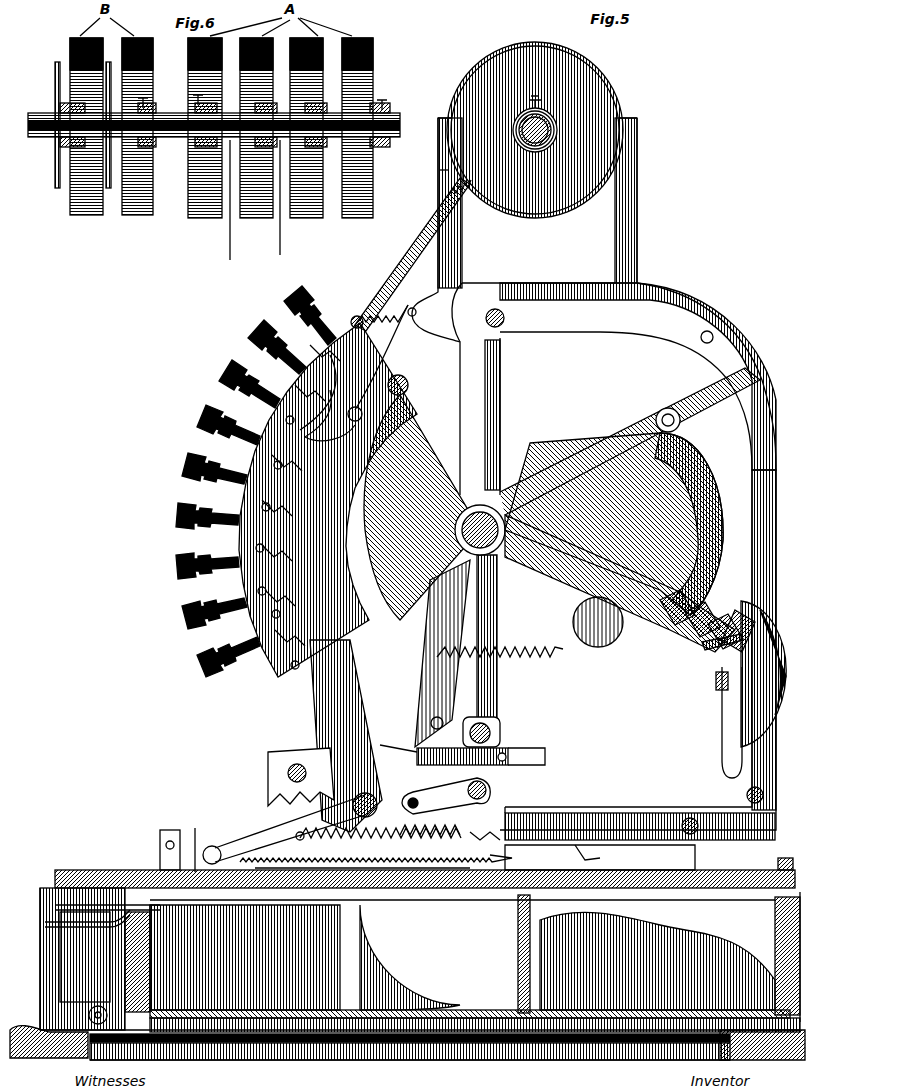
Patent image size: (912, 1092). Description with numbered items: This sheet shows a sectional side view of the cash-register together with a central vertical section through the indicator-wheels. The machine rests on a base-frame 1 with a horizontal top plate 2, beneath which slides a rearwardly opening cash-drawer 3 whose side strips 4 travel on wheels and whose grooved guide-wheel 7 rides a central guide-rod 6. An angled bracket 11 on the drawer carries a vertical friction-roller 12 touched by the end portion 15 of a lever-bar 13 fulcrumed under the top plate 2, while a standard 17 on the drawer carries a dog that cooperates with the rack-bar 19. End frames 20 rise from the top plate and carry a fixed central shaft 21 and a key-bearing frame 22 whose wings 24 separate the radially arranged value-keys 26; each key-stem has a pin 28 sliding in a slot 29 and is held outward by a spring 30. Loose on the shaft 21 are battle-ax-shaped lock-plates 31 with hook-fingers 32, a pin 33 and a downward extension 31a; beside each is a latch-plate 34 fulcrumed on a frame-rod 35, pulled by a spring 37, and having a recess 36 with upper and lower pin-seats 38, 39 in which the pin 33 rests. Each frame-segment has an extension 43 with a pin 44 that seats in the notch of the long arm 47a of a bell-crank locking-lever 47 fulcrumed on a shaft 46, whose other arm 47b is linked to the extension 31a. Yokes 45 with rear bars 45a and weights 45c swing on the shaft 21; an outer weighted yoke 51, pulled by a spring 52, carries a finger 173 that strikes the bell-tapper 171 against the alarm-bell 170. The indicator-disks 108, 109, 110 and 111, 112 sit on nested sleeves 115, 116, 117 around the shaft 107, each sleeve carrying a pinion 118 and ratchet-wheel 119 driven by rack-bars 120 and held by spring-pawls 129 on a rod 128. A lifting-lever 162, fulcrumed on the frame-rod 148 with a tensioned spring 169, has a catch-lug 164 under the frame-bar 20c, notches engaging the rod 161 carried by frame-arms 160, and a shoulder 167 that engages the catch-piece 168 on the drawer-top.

In FIG. 6, the shaft 107 is at (392, 120).
In FIG. 5, the shaft 107 is at (540, 132).
In FIG. 6, the indicator-disk 111 is at (142, 218).
In FIG. 5, the indicator-disk 111 is at (612, 143).
In FIG. 6, the indicator-disk 112 is at (85, 220).
In FIG. 6, the indicator-disk 108 is at (205, 218).
In FIG. 6, the indicator-disk 109 is at (255, 218).
In FIG. 6, the indicator-disk 110 is at (305, 218).
In FIG. 6, the tubular shaft or sleeve 115 is at (299, 202).
In FIG. 5, the tubular shaft or sleeve 115 is at (528, 146).
In FIG. 6, the second sleeve 116 is at (245, 202).
In FIG. 5, the second sleeve 116 is at (537, 148).
In FIG. 6, the third and outer sleeve 117 is at (158, 110).
In FIG. 5, the third and outer sleeve 117 is at (545, 148).
In FIG. 6, the pinion-wheel 118 is at (68, 150).
In FIG. 6, the ratchet-wheel 119 is at (57, 190).
In FIG. 5, the rack-bar 120 is at (410, 268).
In FIG. 5, the transverse rod or shaft 128 is at (448, 194).
In FIG. 5, the spring-pawl 129 is at (440, 172).
In FIG. 5, the spring 37 is at (380, 305).
In FIG. 5, the recess 36 is at (330, 340).
In FIG. 5, the value-keys 26 is at (322, 328).
In FIG. 5, the pin 28 is at (318, 372).
In FIG. 5, the slot 29 is at (280, 415).
In FIG. 5, the hook-fingers 32 is at (273, 463).
In FIG. 5, the spring 30 is at (262, 507).
In FIG. 5, the key-bearing frame 22 is at (256, 547).
In FIG. 5, the wings or ribs 24 is at (258, 591).
In FIG. 5, the latch-plate 34 is at (328, 577).
In FIG. 5, the upper rear pin-seat 38 is at (405, 380).
In FIG. 5, the pin 33 is at (362, 412).
In FIG. 5, the lower forward pin-seat 39 is at (340, 427).
In FIG. 5, the key lock-plate 31 is at (412, 455).
In FIG. 5, the end frames 20 is at (492, 392).
In FIG. 5, the cross frame-bar 20c is at (640, 812).
In FIG. 5, the transverse rod or shaft 21 is at (505, 462).
In FIG. 5, the upper side weight 45c is at (680, 460).
In FIG. 5, the yoke-shaped frame 45 is at (620, 590).
In FIG. 5, the rear bar 45a is at (700, 645).
In FIG. 5, the weighted yoke 51 is at (752, 618).
In FIG. 5, the tapper-operating finger 173 is at (720, 660).
In FIG. 5, the bell-tapper 171 is at (722, 736).
In FIG. 5, the alarm-bell 170 is at (774, 682).
In FIG. 5, the spring 52 is at (510, 640).
In FIG. 5, the extension 43 is at (455, 690).
In FIG. 5, the forward arm 47a is at (420, 722).
In FIG. 5, the downward extension 31a is at (470, 700).
In FIG. 5, the pin 44 is at (470, 750).
In FIG. 5, the segment locking-lever 47 is at (492, 728).
In FIG. 5, the horizontal shaft 46 is at (445, 725).
In FIG. 5, the remaining arm 47b is at (512, 755).
In FIG. 5, the frame-rod 148 is at (505, 785).
In FIG. 5, the transverse frame-rod 35 is at (352, 805).
In FIG. 5, the downturned outer end or shoulder 167 is at (218, 850).
In FIG. 5, the catch-piece 168 is at (218, 850).
In FIG. 5, the bracket or standard 17 is at (168, 830).
In FIG. 5, the lever-bar 13 is at (205, 842).
In FIG. 5, the spring 169 is at (378, 844).
In FIG. 5, the lifting-lever 162 is at (362, 855).
In FIG. 5, the rod 161 is at (430, 842).
In FIG. 5, the frame-arms 160 is at (477, 841).
In FIG. 5, the rack-bar 19 is at (376, 849).
In FIG. 5, the catch-lug 164 is at (591, 858).
In FIG. 5, the side strips 4 is at (600, 858).
In FIG. 5, the top plate 2 is at (112, 870).
In FIG. 5, the base-frame 1 is at (535, 1045).
In FIG. 5, the cash-drawer 3 is at (148, 1012).
In FIG. 5, the central guide-rod 6 is at (382, 1040).
In FIG. 5, the bracket 11 is at (55, 905).
In FIG. 5, the end portion of lever-bar 15 is at (45, 923).
In FIG. 5, the friction-roller 12 is at (62, 950).
In FIG. 5, the guide-wheel 7 is at (88, 1012).